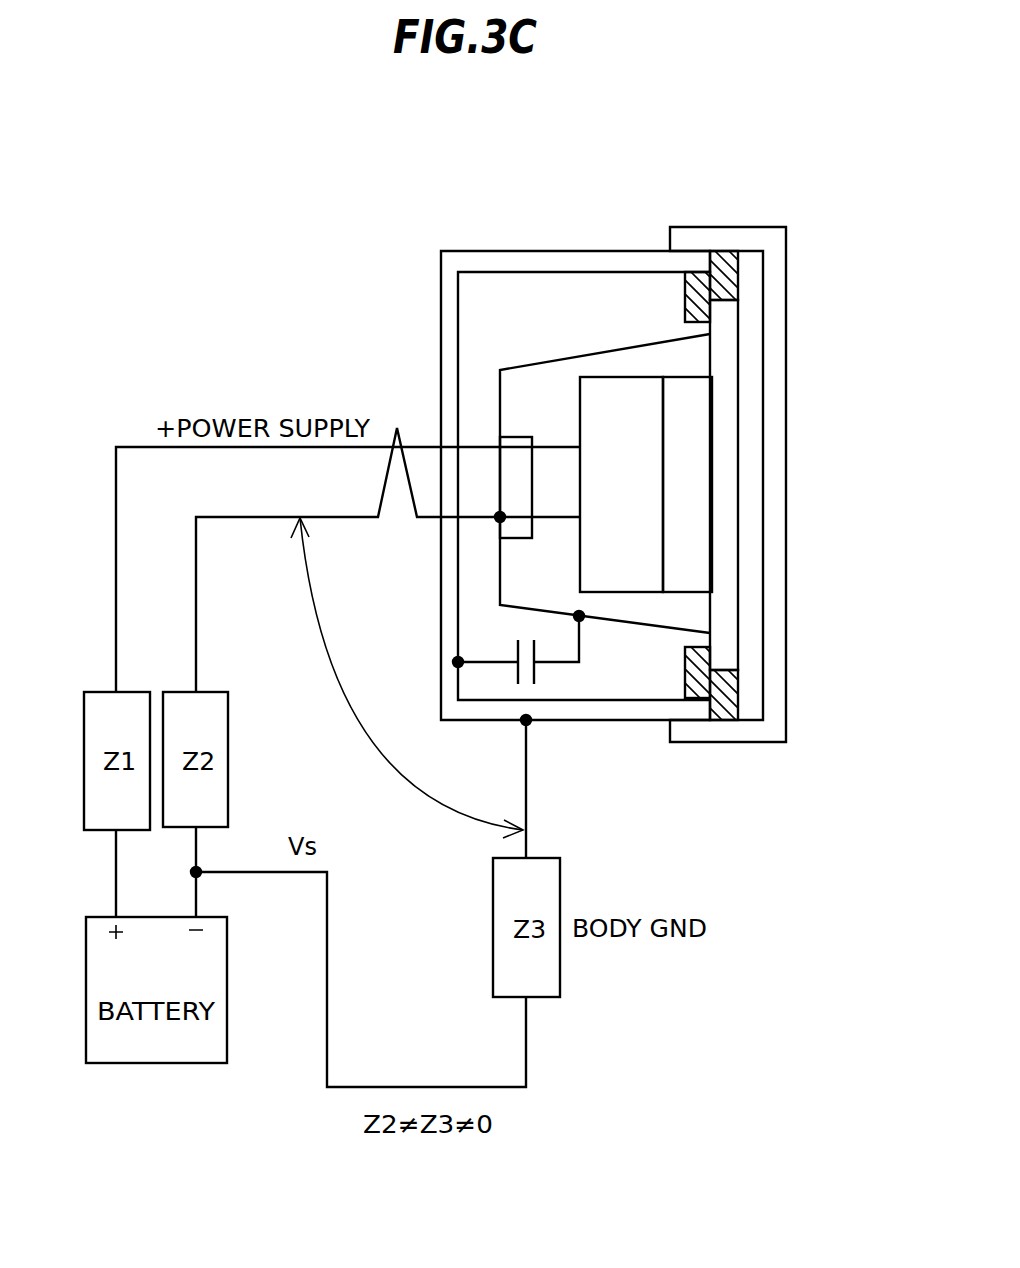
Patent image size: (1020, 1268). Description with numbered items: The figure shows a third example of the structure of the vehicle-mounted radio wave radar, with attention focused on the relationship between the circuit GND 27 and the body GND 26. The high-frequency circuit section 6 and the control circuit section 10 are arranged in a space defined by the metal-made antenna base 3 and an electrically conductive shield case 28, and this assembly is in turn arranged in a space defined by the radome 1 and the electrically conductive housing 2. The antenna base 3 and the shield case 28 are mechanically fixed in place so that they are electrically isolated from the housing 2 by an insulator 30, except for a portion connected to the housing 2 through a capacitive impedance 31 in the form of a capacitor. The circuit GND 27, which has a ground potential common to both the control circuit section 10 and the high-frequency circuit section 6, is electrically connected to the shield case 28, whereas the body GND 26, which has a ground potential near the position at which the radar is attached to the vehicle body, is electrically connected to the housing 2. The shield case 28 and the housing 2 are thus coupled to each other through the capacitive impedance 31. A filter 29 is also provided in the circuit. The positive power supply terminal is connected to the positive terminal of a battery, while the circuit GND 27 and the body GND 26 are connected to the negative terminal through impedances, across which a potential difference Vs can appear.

The radome 1 is at (728, 742).
The electrically conductive housing 2 is at (457, 262).
The antenna base 3 is at (740, 355).
The high-frequency circuit section 6 is at (700, 385).
The control circuit section 10 is at (623, 384).
The body GND 26 is at (527, 780).
The circuit GND 27 is at (230, 518).
The electrically conductive shield case 28 is at (547, 360).
The filter 29 is at (512, 475).
The insulator 30 is at (728, 280).
The capacitive impedance 31 is at (505, 645).